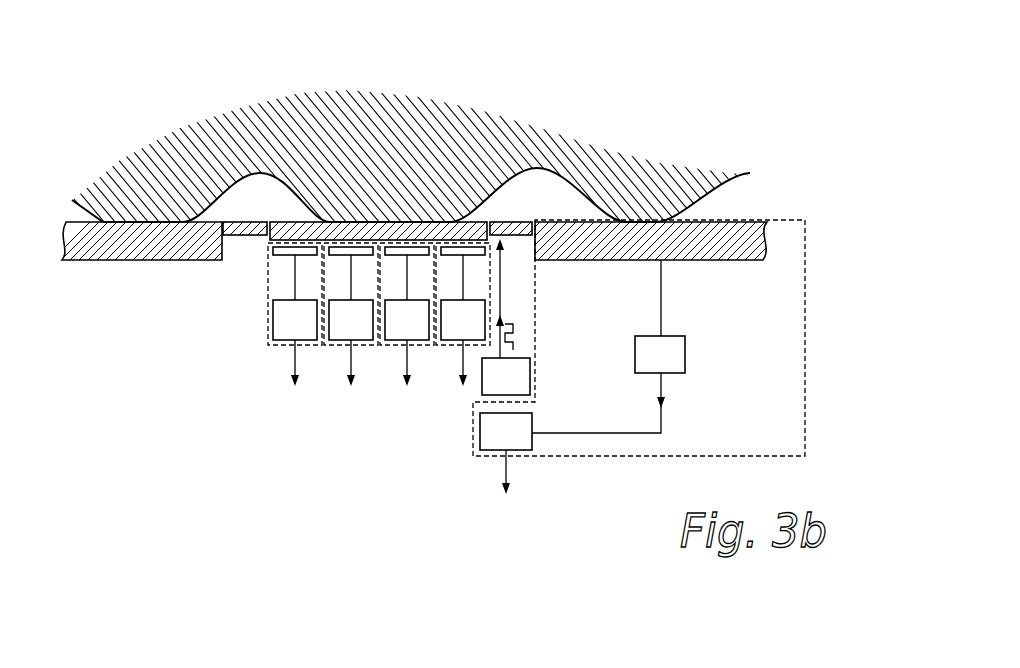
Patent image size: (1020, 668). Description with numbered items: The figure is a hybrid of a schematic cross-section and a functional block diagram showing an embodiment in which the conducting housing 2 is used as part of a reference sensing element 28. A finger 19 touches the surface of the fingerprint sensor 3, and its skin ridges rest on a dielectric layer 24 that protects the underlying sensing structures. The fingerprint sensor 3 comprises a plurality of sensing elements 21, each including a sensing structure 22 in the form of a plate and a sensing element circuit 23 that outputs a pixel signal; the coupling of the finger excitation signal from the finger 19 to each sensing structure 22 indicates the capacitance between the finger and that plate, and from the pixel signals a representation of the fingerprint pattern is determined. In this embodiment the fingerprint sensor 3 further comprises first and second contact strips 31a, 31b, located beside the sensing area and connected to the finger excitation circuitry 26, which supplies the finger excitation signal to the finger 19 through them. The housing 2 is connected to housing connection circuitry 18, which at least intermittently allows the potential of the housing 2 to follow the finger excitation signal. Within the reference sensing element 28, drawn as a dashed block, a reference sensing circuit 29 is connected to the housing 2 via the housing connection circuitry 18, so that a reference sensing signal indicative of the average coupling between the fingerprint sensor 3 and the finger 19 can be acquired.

The conductive housing 2 is at (106, 258).
The fingerprint sensor 3 is at (322, 379).
The housing connection circuitry 18 is at (685, 354).
The finger 19 is at (407, 145).
The sensing element 21 is at (269, 337).
The sensing structure 22 is at (273, 251).
The sensing element circuit 23 is at (272, 313).
The dielectric layer 24 is at (327, 222).
The finger excitation circuitry 26 is at (482, 385).
The reference sensing element 28 is at (790, 219).
The reference sensing circuit 29 is at (487, 452).
The first contact strip 31a is at (250, 222).
The second contact strip 31b is at (510, 222).